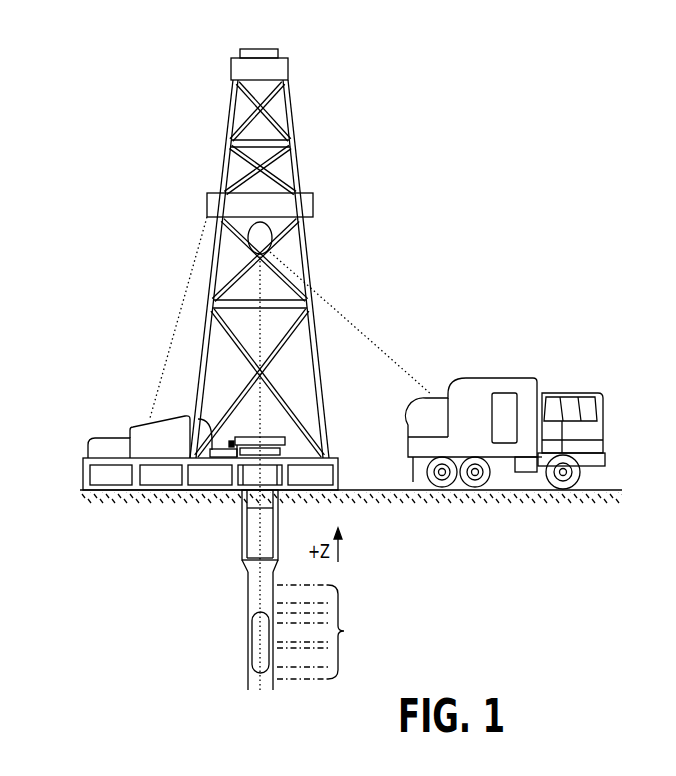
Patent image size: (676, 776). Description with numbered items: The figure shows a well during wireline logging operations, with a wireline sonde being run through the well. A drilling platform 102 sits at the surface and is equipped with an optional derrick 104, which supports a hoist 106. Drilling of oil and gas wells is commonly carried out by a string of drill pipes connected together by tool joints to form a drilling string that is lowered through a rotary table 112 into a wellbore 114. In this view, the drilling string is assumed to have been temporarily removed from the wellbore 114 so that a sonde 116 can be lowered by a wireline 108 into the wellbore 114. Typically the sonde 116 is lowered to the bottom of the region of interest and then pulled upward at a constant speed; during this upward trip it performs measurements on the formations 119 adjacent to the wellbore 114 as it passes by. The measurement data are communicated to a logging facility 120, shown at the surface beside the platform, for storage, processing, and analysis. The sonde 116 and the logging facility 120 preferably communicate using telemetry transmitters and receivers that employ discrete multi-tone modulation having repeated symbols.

The drilling platform 102 is at (338, 471).
The derrick 104 is at (328, 425).
The hoist 106 is at (273, 231).
The wireline 108 is at (328, 304).
The rotary table 112 is at (275, 436).
The wellbore 114 is at (248, 573).
The sonde 116 is at (256, 633).
The formations 119 is at (329, 632).
The logging facility 120 is at (472, 378).